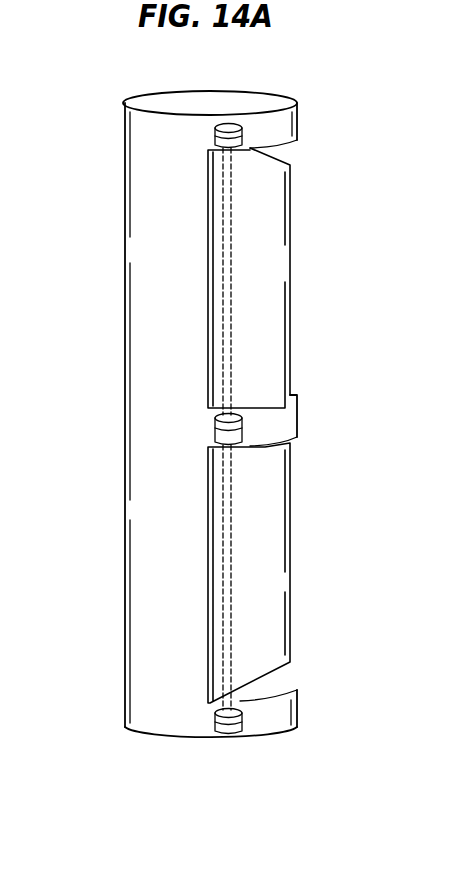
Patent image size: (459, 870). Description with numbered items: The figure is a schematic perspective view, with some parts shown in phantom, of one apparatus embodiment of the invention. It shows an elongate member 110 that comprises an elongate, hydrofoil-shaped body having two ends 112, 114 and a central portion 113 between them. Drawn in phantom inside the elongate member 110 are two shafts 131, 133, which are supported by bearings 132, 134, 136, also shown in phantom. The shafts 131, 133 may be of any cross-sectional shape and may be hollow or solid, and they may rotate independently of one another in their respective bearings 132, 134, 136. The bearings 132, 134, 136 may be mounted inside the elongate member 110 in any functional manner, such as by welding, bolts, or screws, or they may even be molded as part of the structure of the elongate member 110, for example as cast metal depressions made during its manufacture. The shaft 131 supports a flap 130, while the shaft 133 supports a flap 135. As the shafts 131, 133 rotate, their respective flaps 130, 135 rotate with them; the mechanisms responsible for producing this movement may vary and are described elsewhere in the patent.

The elongate member 110 is at (137, 461).
The end 112 is at (285, 123).
The central portion 113 is at (290, 418).
The end 114 is at (285, 712).
The flap 130 is at (273, 307).
The shaft 131 is at (233, 253).
The bearing 132 is at (247, 122).
The shaft 133 is at (233, 527).
The bearing 134 is at (237, 428).
The flap 135 is at (273, 601).
The bearing 136 is at (250, 737).